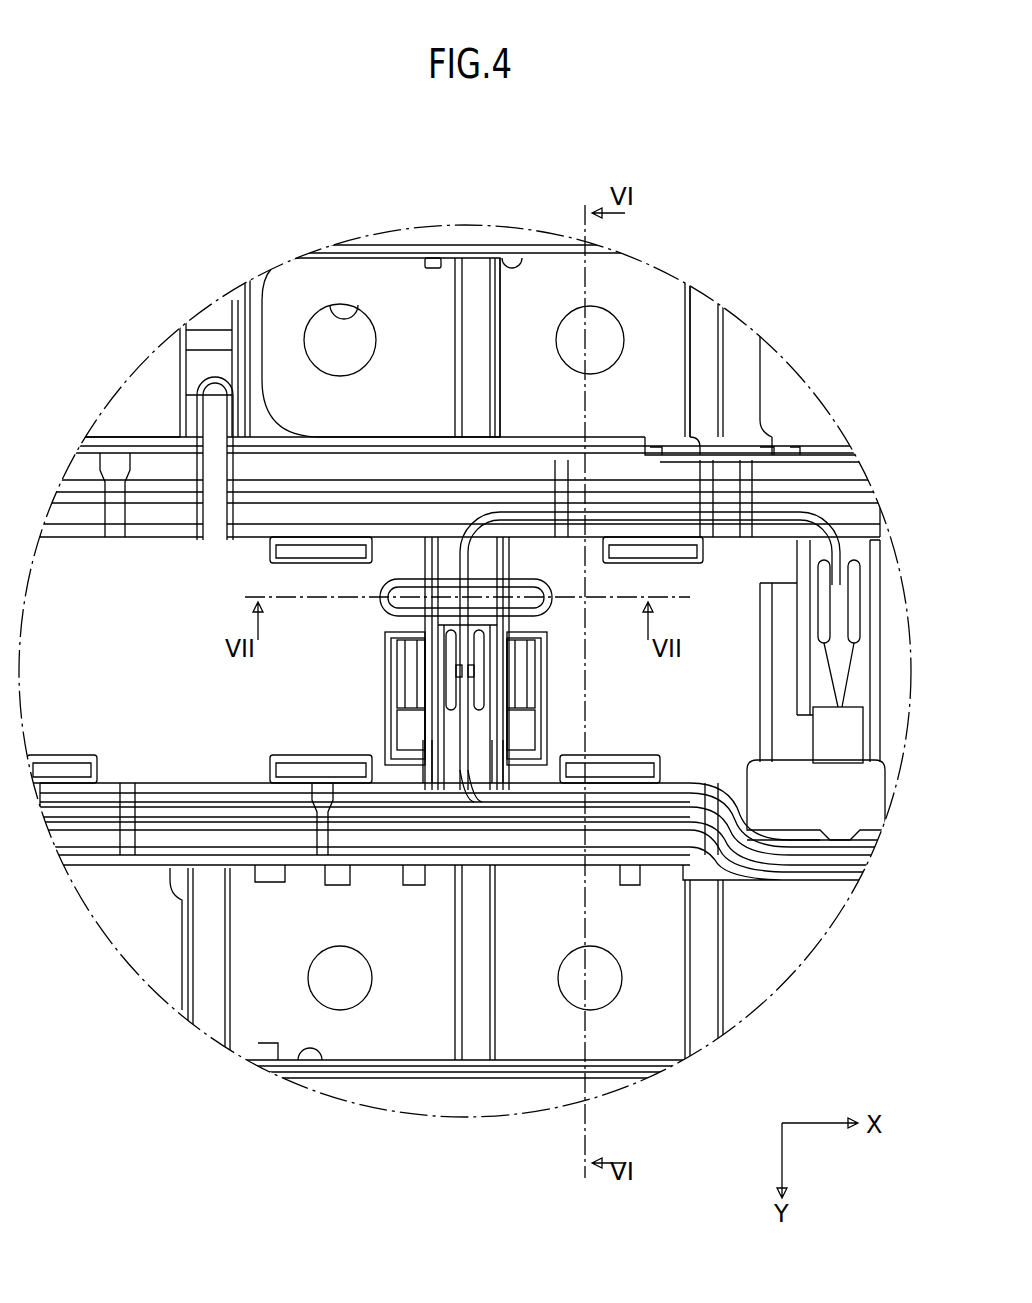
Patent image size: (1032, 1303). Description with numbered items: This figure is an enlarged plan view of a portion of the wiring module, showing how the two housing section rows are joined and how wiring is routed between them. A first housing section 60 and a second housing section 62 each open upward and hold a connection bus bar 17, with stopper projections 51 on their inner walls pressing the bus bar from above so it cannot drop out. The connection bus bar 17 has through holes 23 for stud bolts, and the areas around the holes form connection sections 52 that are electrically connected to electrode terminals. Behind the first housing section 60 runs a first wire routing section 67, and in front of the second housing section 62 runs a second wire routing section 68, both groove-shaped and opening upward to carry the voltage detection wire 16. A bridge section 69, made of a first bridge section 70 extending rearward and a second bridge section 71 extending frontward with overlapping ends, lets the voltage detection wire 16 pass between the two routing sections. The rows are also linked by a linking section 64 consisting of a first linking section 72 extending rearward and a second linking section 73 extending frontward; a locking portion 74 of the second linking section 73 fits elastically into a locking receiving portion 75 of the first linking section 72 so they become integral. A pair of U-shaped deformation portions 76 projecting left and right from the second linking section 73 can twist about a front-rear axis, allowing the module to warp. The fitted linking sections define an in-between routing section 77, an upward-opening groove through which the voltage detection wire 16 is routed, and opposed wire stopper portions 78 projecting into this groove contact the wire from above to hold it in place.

The voltage detection wire 16 is at (838, 530).
The connection bus bar 17 is at (545, 275).
The through hole 23 is at (355, 323).
The stopper projection 51 is at (432, 262).
The connection section 52 is at (318, 285).
The first housing section 60 is at (318, 1063).
The second housing section 62 is at (510, 258).
The linking section 64 is at (405, 1172).
The first wire routing section 67 is at (85, 812).
The second wire routing section 68 is at (72, 520).
The bridge section 69 is at (842, 747).
The first bridge section 70 is at (855, 665).
The second bridge section 71 is at (876, 740).
The first linking section 72 is at (445, 780).
The second linking section 73 is at (452, 748).
The locking portion 74 is at (408, 725).
The locking receiving portion 75 is at (385, 745).
The deformation portion 76 is at (385, 597).
The in-between routing section 77 is at (450, 535).
The wire stopper portion 78 is at (458, 675).